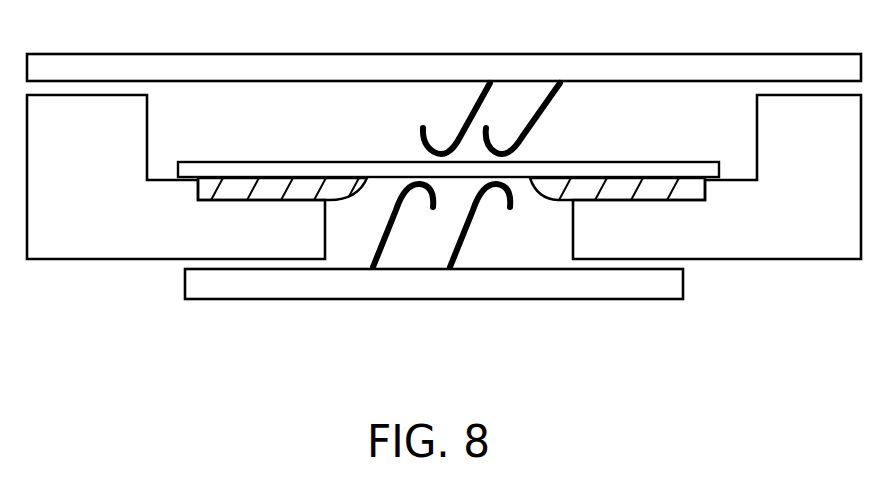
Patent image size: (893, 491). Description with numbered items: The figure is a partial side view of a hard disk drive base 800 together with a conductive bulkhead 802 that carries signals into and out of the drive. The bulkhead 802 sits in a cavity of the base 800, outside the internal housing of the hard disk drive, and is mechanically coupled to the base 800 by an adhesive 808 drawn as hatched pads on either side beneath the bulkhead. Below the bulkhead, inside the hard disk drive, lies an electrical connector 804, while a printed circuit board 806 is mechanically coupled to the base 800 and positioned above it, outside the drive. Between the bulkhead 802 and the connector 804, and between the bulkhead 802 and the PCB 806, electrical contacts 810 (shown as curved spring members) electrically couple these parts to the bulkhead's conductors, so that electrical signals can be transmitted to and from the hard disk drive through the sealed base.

The hard disk drive base 800 is at (222, 240).
The conductive bulkhead 802 is at (585, 168).
The electrical connector 804 is at (582, 300).
The printed circuit board (PCB) 806 is at (372, 63).
The adhesive 808 is at (688, 192).
The electrical contacts 810 is at (450, 250).